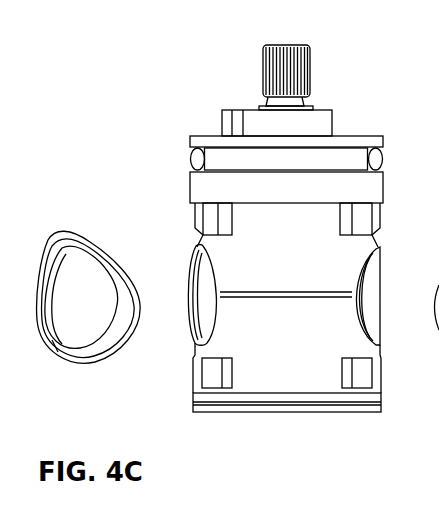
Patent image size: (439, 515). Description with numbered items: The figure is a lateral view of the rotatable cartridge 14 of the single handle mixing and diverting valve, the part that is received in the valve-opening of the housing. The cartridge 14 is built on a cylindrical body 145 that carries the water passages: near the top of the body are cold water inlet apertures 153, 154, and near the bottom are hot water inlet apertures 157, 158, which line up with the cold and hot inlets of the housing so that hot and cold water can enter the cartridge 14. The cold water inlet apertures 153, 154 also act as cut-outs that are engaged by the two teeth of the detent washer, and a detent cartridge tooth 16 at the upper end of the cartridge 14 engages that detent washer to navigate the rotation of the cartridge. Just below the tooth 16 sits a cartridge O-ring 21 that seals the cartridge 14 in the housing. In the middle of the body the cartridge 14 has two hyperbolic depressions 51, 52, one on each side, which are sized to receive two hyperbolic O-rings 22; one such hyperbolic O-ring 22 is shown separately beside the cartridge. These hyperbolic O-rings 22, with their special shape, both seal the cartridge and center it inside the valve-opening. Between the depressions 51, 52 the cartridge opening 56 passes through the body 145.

The cartridge 14 is at (158, 78).
The detent cartridge tooth 16 is at (235, 110).
The cartridge O-ring 21 is at (200, 157).
The hyperbolic O-ring 22 is at (70, 246).
The hyperbolic depression 51 is at (197, 245).
The hyperbolic depression 52 is at (379, 240).
The cartridge opening 56 is at (200, 297).
The cylindrical body 145 is at (278, 370).
The cold water inlet aperture 153 is at (207, 217).
The cold water inlet aperture 154 is at (355, 218).
The hot water inlet aperture 157 is at (208, 378).
The hot water inlet aperture 158 is at (362, 378).